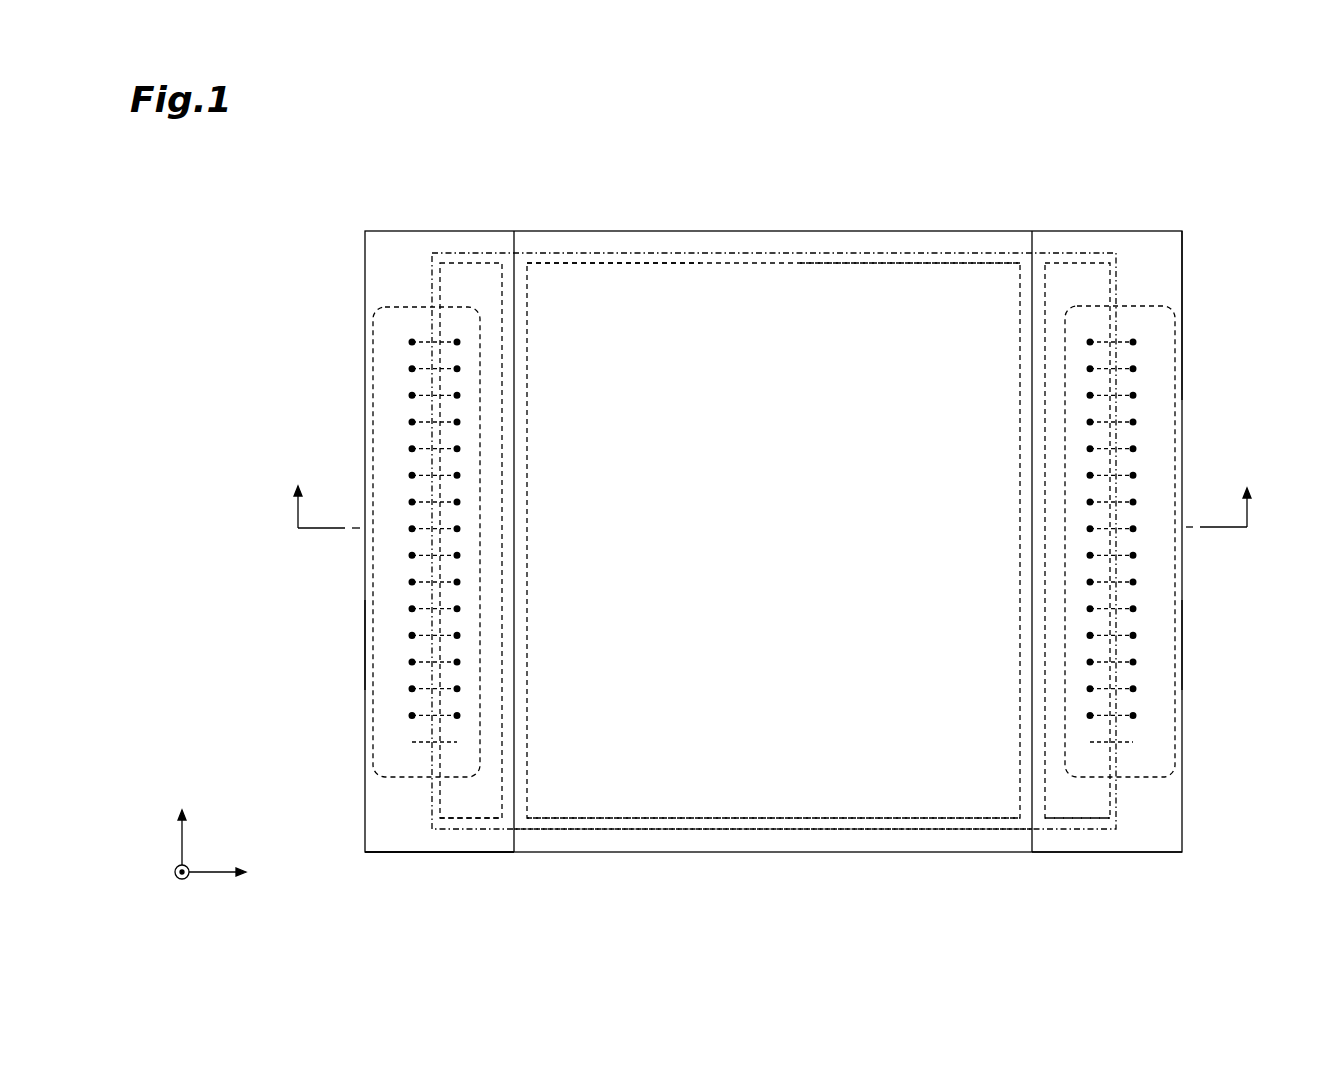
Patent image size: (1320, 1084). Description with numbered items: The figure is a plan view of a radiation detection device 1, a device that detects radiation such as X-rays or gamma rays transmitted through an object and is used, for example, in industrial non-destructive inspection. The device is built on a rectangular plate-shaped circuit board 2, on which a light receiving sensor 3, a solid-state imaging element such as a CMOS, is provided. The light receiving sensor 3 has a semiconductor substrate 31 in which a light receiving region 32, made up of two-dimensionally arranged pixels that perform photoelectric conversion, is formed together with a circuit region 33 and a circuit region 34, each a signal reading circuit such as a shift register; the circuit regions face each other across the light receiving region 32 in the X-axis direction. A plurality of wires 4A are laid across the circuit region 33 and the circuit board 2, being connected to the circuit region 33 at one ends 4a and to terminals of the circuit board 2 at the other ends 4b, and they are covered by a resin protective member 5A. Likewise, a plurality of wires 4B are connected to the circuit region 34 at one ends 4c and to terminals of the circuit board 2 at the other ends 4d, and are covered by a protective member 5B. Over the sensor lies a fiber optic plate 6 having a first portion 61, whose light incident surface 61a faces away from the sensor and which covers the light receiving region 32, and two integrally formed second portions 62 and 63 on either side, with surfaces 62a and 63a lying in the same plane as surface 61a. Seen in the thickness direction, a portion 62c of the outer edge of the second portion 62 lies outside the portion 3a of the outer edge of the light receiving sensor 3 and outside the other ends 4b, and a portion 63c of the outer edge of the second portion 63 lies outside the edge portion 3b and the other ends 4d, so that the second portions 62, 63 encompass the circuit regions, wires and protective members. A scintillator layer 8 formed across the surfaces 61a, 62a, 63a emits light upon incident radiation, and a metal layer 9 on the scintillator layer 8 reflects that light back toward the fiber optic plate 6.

The radiation detection device 1 is at (977, 178).
The circuit board 2 is at (1182, 293).
The light receiving sensor 3 is at (724, 255).
The portion of outer edge of light receiving sensor 3a is at (1118, 800).
The portion of outer edge of light receiving sensor 3b is at (420, 800).
The wires 4A is at (1133, 342).
The wires 4B is at (412, 395).
The one ends of wires 4A 4a is at (1090, 342).
The other ends of wires 4A 4b is at (1140, 343).
The one ends of wires 4B 4c is at (457, 422).
The other ends of wires 4B 4d is at (412, 422).
The protective member 5A is at (1155, 458).
The protective member 5B is at (395, 571).
The fiber optic plate 6 is at (798, 228).
The scintillator layer 8 is at (365, 265).
The metal layer 9 is at (385, 830).
The semiconductor substrate 31 is at (623, 262).
The light receiving region 32 is at (878, 295).
The circuit region 33 is at (1078, 268).
The circuit region 34 is at (466, 268).
The first portion 61 is at (775, 840).
The surface of first portion 61a is at (858, 840).
The second portion 62 is at (1108, 853).
The surface of second portion 62 62a is at (1046, 853).
The portion of outer edge of second portion 62 62c is at (1182, 644).
The second portion 63 is at (437, 853).
The surface of second portion 63 63a is at (501, 853).
The portion of outer edge of second portion 63 63c is at (365, 644).